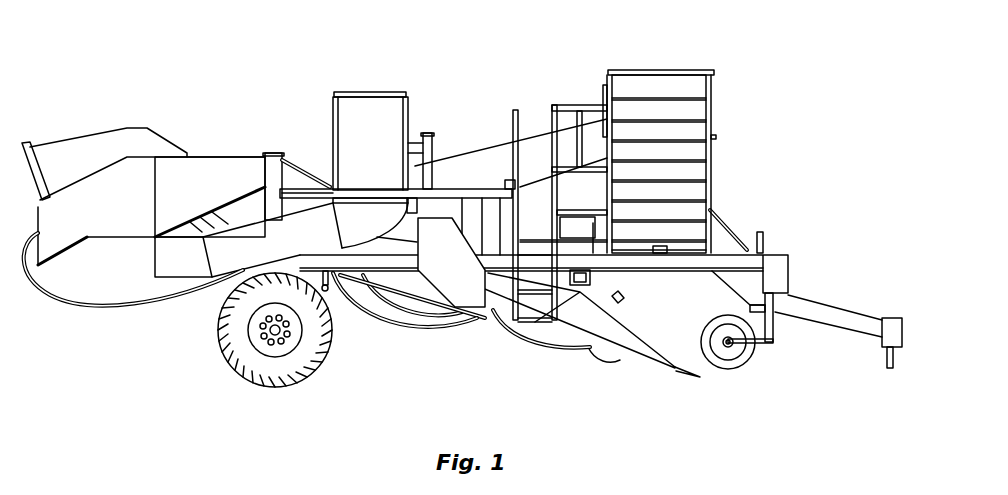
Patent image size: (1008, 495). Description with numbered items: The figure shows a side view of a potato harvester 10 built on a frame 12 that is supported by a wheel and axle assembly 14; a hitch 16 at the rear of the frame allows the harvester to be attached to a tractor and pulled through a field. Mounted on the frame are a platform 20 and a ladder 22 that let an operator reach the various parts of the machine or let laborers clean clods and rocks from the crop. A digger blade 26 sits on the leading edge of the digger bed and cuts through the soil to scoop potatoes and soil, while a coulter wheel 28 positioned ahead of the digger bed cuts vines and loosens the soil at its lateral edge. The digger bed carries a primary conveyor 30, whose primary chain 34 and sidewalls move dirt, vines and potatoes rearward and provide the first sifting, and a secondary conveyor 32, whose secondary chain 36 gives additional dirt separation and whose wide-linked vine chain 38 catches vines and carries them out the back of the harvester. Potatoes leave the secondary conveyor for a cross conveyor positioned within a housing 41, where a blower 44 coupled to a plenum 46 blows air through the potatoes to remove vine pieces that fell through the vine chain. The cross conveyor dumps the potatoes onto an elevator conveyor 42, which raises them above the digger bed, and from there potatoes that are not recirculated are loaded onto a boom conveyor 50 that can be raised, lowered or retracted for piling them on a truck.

The potato harvester 10 is at (304, 62).
The frame 12 is at (727, 262).
The wheel and axle assembly 14 is at (230, 363).
The hitch 16 is at (822, 301).
The platform 20 is at (587, 207).
The ladder 22 is at (516, 110).
The digger blade 26 is at (693, 373).
The coulter wheel 28 is at (755, 363).
The primary conveyor 30 is at (608, 320).
The secondary conveyor 32 is at (403, 278).
The primary chain 34 is at (533, 345).
The secondary chain 36 is at (438, 313).
The vine chain 38 is at (362, 313).
The housing 41 is at (207, 170).
The elevator conveyor 42 is at (463, 150).
The blower 44 is at (365, 92).
The plenum 46 is at (182, 267).
The boom conveyor 50 is at (667, 68).